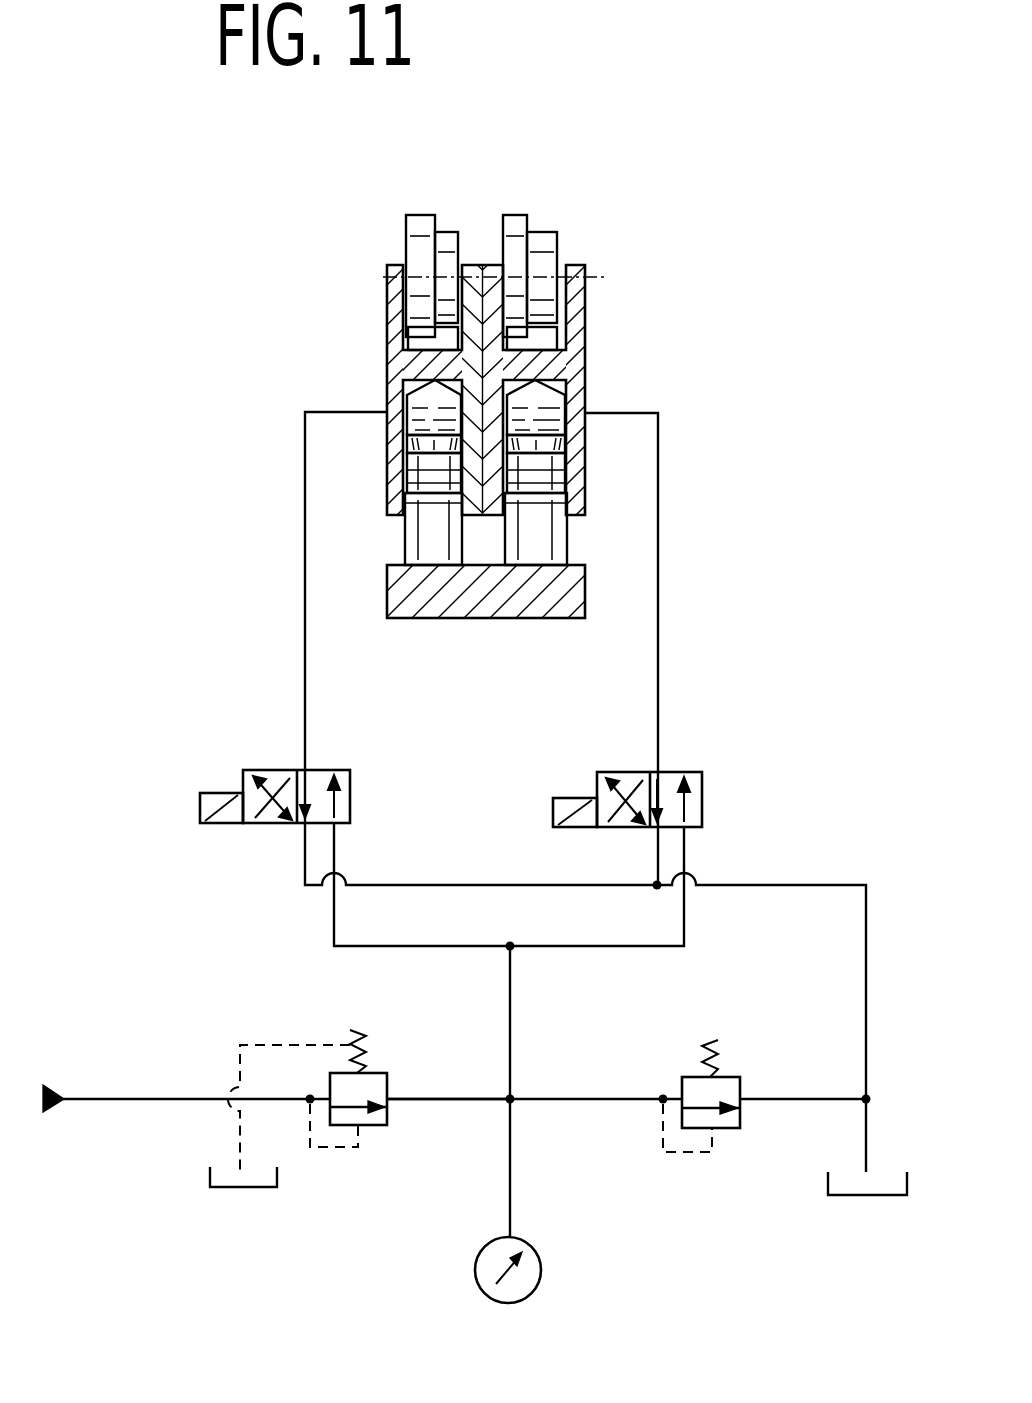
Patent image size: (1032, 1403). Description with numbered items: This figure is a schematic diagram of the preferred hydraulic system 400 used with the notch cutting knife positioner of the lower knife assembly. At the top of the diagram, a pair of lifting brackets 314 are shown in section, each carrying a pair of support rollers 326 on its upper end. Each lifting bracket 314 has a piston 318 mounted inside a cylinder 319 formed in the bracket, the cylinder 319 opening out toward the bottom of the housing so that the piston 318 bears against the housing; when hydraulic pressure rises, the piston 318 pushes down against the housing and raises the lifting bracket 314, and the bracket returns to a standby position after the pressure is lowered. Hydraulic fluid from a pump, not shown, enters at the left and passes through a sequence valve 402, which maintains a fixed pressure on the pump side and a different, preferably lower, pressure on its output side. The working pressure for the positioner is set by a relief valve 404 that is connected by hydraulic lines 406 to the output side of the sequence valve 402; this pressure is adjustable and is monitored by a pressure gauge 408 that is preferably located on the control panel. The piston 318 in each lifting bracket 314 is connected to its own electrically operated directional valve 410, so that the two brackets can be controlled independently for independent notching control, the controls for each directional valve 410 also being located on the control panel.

The lifting bracket 314 is at (397, 340).
The support rollers 326 is at (419, 216).
The cylinder 319 is at (447, 408).
The piston 318 is at (416, 526).
The hydraulic system 400 is at (795, 541).
The directional valve 410 is at (267, 772).
The sequence valve 402 is at (386, 1126).
The relief valve 404 is at (741, 1115).
The hydraulic lines 406 is at (468, 1098).
The pressure gauge 408 is at (541, 1272).